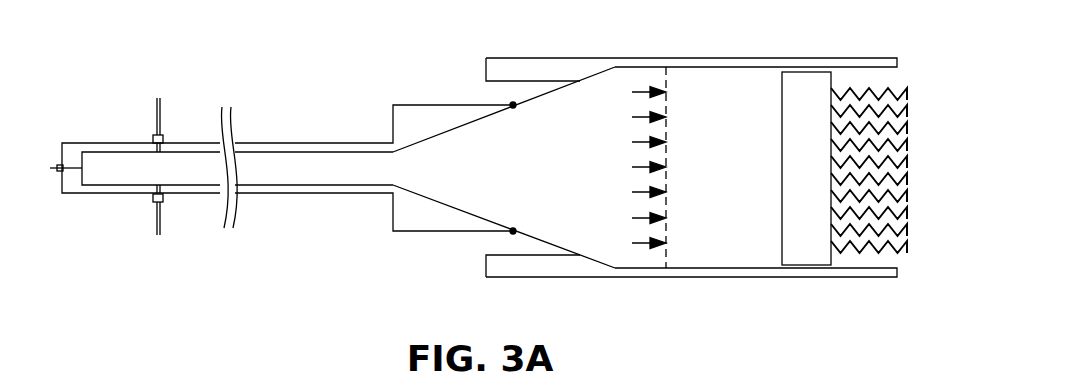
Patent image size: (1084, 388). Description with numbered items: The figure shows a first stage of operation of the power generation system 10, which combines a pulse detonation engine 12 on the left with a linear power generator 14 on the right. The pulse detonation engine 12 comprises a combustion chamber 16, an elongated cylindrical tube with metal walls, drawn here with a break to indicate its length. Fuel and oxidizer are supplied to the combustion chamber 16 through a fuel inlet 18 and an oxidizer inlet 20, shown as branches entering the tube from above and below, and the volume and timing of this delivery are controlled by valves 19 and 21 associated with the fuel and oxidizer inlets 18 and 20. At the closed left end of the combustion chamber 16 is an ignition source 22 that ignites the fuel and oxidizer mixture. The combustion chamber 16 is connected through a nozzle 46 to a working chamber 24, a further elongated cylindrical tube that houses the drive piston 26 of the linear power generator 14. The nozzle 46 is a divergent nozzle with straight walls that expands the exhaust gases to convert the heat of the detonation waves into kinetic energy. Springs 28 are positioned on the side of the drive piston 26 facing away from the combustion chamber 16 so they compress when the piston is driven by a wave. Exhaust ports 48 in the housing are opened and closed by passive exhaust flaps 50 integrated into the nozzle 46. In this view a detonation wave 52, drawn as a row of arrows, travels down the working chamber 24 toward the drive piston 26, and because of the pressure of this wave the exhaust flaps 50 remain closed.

The power generation system 10 is at (286, 42).
The pulse detonation engine 12 is at (172, 307).
The linear power generator 14 is at (722, 307).
The combustion chamber 16 is at (280, 143).
The fuel inlet 18 is at (161, 102).
The valve 19 is at (154, 138).
The oxidizer inlet 20 is at (161, 233).
The valve 21 is at (154, 199).
The ignition source 22 is at (52, 163).
The working chamber 24 is at (715, 58).
The drive piston 26 is at (800, 168).
The springs 28 is at (934, 153).
The nozzle 46 is at (463, 143).
The exhaust ports 48 is at (515, 90).
The passive exhaust flaps 50 is at (540, 97).
The detonation wave 52 is at (692, 134).